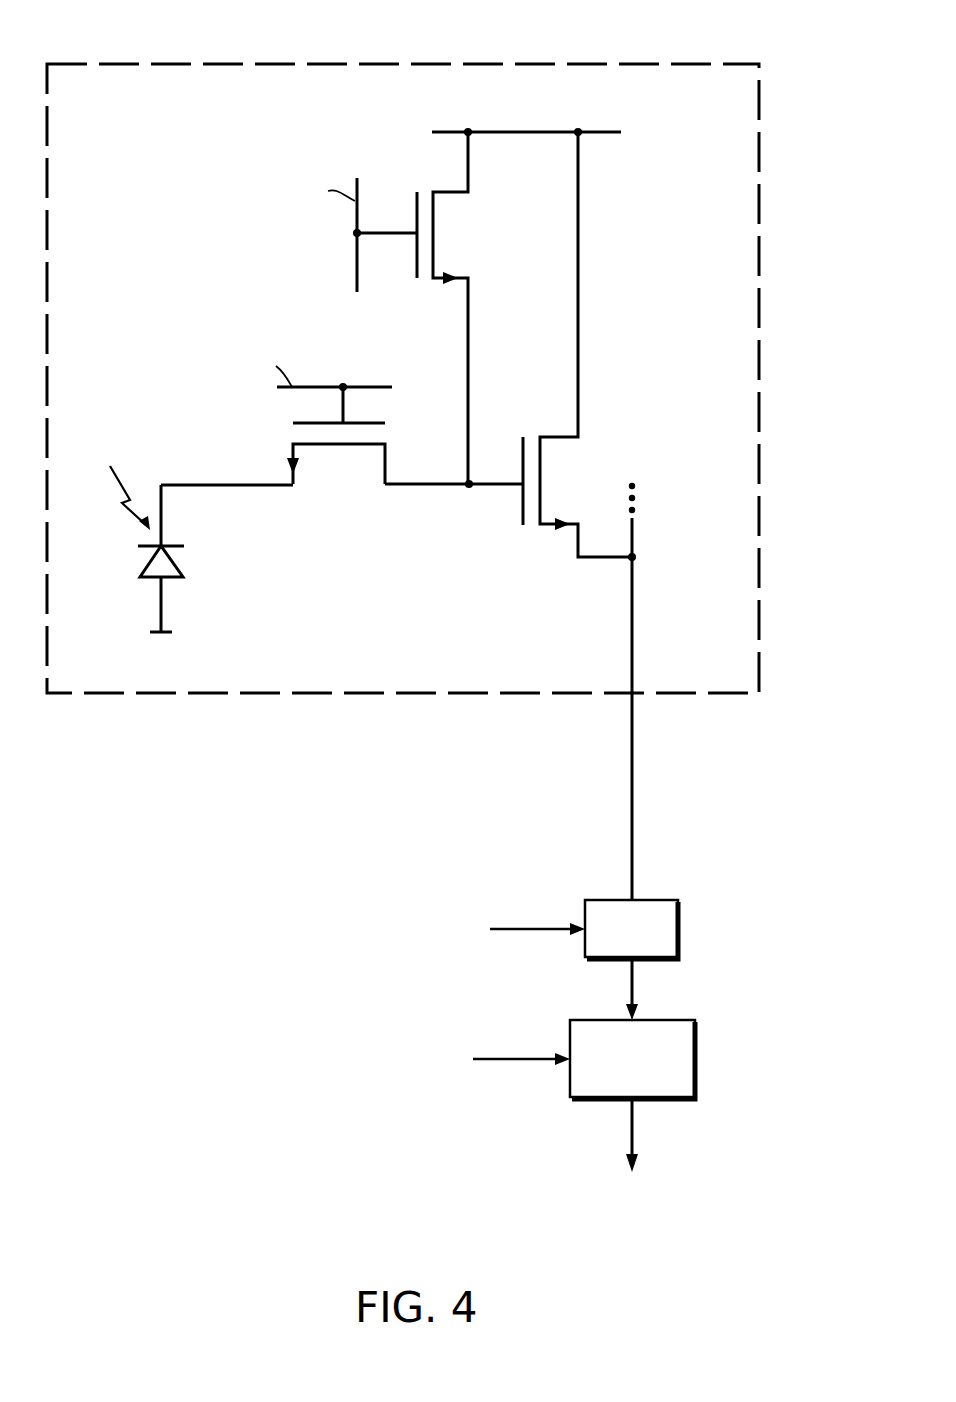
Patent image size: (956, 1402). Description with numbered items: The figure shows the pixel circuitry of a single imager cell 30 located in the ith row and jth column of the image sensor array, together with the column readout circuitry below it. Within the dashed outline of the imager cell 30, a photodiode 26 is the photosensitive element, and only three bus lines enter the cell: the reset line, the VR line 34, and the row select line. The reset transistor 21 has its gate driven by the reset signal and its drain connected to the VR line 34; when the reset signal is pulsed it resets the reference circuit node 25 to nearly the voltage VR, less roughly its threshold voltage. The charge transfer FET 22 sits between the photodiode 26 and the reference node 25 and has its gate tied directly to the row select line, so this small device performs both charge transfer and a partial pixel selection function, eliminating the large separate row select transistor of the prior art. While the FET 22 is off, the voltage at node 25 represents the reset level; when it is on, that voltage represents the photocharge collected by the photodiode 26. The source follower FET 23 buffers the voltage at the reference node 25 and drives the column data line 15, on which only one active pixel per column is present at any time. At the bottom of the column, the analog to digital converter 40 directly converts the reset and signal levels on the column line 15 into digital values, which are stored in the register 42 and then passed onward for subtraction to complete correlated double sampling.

The imager cell 30 is at (545, 63).
The VR line 34 is at (524, 131).
The reset transistor 21 is at (436, 264).
The charge transfer FET 22 is at (302, 423).
The photodiode 26 is at (176, 563).
The reference circuit node 25 is at (470, 486).
The source follower FET 23 is at (556, 436).
The column data line 15 is at (633, 595).
The analog to digital converter 40 is at (680, 912).
The register 42 is at (697, 1044).